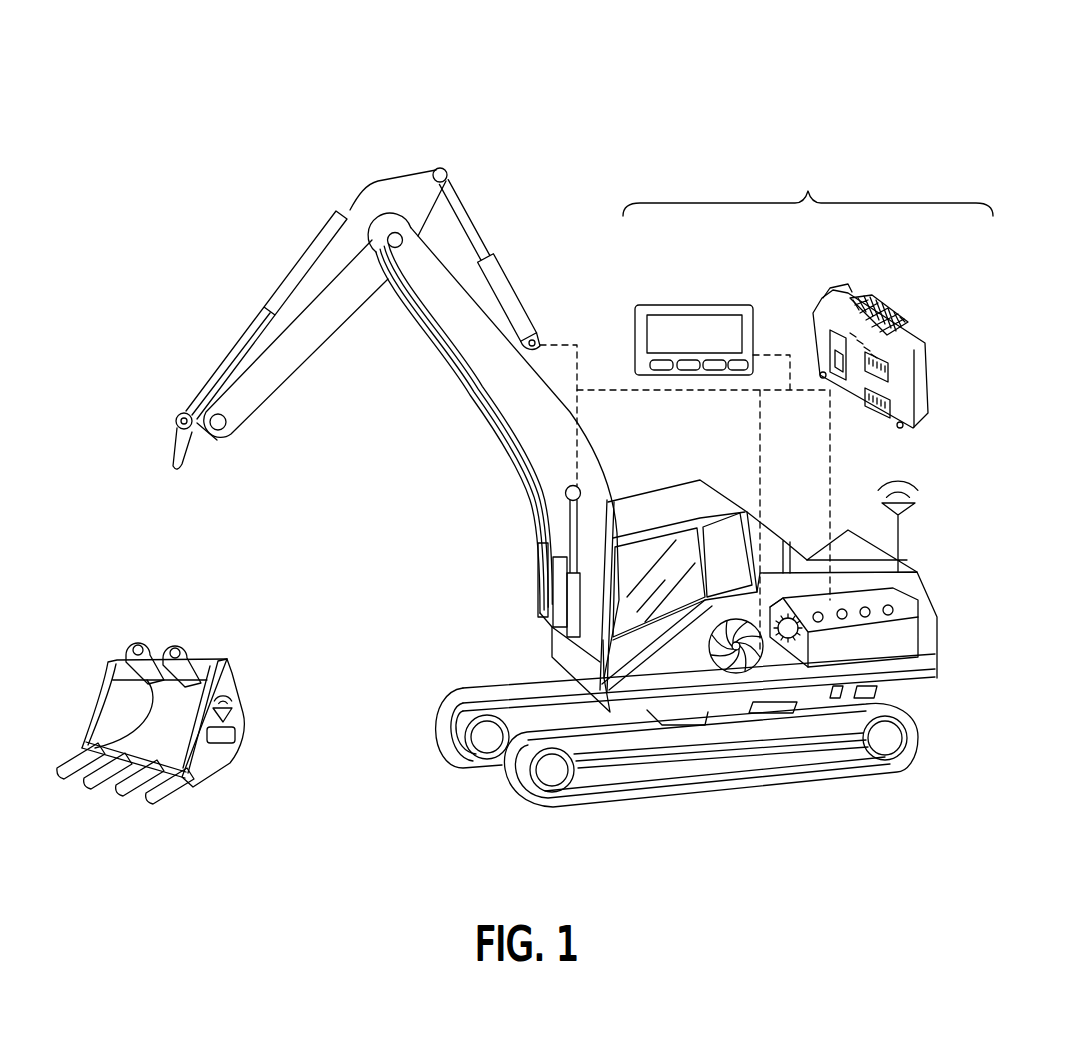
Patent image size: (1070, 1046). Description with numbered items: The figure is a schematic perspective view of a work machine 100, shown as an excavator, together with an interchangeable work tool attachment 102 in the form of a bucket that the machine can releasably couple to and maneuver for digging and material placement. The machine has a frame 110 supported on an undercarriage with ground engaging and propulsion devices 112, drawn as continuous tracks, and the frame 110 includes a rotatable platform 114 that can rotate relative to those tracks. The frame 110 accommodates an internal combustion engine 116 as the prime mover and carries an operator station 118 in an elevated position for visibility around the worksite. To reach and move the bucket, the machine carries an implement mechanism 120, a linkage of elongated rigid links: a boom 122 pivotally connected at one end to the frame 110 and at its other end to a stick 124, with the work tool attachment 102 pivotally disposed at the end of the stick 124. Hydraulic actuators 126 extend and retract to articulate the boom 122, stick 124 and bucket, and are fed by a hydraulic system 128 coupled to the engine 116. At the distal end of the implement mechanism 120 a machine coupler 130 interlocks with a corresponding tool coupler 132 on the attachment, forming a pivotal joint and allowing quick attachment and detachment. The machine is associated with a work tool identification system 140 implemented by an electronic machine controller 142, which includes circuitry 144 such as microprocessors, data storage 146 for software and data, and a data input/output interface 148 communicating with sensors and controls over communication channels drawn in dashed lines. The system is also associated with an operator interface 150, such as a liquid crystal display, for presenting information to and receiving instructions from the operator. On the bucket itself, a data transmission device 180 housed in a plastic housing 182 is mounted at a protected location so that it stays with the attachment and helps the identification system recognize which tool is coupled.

The work machine 100 is at (978, 128).
The work tool attachment 102 is at (232, 767).
The frame 110 is at (563, 675).
The ground engaging and propulsion devices 112 is at (895, 767).
The rotatable platform 114 is at (738, 708).
The internal combustion engine 116 is at (913, 607).
The operator station 118 is at (623, 583).
The implement mechanism 120 is at (249, 284).
The boom 122 is at (547, 447).
The stick 124 is at (353, 223).
The actuators 126 is at (215, 370).
The hydraulic system 128 is at (722, 667).
The machine coupler 130 is at (164, 439).
The tool coupler 132 is at (130, 643).
The work tool identification system 140 is at (785, 401).
The electronic machine controller 142 is at (888, 308).
The circuitry 144 is at (921, 358).
The data storage 146 is at (826, 380).
The data input/output interface 148 is at (877, 407).
The operator interface 150 is at (730, 303).
The data transmission device 180 is at (233, 718).
The plastic housing 182 is at (228, 737).